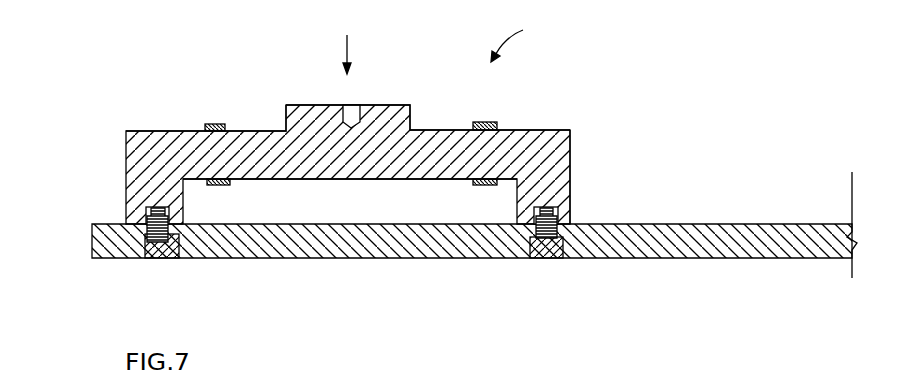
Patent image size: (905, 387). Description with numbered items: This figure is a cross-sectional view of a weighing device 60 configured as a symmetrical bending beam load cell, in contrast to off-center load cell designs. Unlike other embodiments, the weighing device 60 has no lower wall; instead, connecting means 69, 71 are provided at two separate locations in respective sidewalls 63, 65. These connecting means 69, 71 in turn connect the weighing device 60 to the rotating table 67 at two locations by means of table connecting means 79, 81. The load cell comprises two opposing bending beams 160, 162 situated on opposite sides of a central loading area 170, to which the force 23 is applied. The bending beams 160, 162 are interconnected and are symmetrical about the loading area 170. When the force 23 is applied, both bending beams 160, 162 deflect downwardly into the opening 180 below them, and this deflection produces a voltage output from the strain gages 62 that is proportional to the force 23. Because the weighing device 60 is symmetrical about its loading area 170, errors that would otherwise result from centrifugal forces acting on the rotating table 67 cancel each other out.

The weighing device 60 is at (525, 34).
The force 23 is at (348, 53).
The strain gages 62 is at (217, 124).
The sidewall 63 is at (135, 175).
The sidewall 65 is at (565, 165).
The rotating table 67 is at (702, 238).
The connecting means 69 is at (190, 240).
The connecting means 71 is at (580, 238).
The table connecting means 79 is at (143, 245).
The table connecting means 81 is at (527, 247).
The bending beam 160 is at (172, 131).
The bending beam 162 is at (452, 130).
The loading area 170 is at (307, 105).
The opening 180 is at (345, 213).